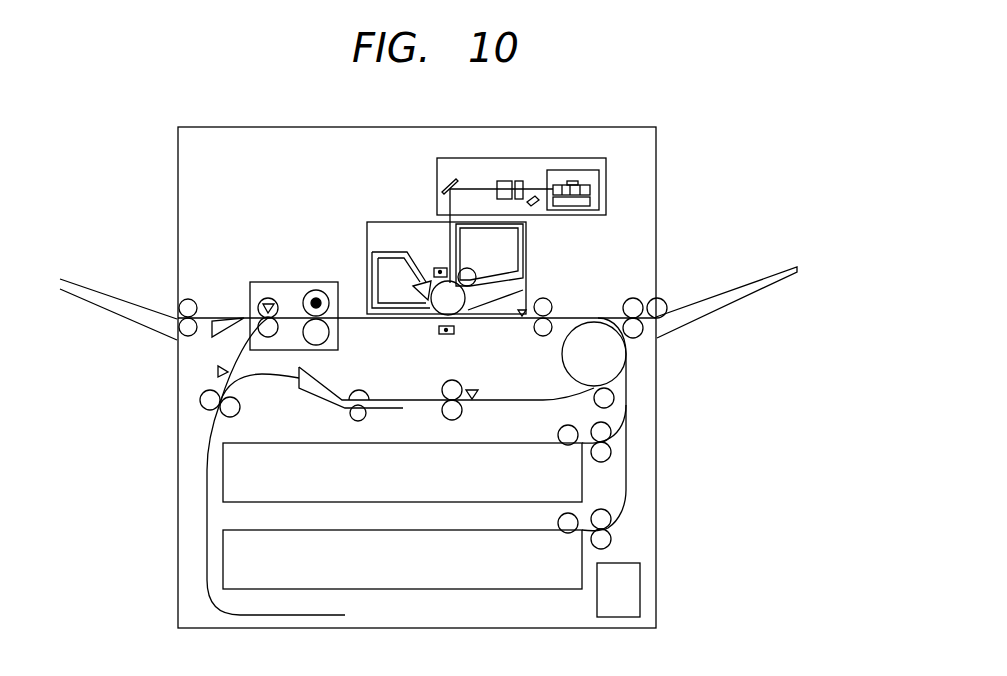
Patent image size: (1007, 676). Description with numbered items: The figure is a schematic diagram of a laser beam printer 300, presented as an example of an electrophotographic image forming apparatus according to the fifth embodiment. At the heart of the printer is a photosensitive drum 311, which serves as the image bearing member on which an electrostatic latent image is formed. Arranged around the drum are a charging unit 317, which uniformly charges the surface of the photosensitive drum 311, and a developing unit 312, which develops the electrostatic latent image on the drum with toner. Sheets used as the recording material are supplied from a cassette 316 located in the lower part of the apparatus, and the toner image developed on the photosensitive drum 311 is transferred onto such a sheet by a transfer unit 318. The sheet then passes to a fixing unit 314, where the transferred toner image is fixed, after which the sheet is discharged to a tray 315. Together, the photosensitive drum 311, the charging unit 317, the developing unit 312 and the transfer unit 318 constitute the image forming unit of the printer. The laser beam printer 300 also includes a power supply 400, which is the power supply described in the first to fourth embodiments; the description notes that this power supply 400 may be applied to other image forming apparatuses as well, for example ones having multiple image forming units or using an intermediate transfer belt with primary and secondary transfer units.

The laser beam printer 300 is at (563, 127).
The photosensitive drum 311 is at (463, 297).
The developing unit 312 is at (472, 276).
The fixing unit 314 is at (294, 281).
The tray 315 is at (110, 297).
The cassette 316 is at (573, 479).
The charging unit 317 is at (440, 267).
The transfer unit 318 is at (454, 330).
The power supply 400 is at (633, 592).